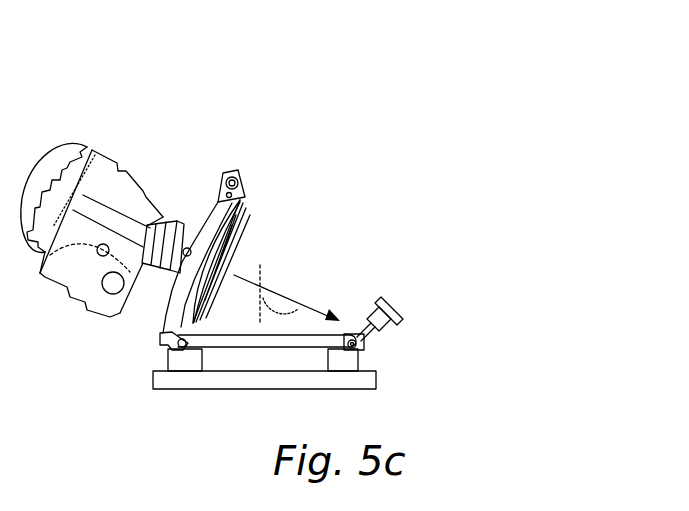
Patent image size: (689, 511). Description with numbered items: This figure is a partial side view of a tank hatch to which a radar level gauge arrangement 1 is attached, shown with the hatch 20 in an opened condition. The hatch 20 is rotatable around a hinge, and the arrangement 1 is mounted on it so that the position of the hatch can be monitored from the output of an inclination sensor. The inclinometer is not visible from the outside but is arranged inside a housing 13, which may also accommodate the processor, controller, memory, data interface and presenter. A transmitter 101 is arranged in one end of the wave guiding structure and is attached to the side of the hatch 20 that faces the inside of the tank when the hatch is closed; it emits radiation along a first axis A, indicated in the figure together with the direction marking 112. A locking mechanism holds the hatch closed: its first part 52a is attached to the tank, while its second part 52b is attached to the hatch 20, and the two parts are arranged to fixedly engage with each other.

The radar level gauge arrangement 1 is at (298, 79).
The housing 13 is at (71, 119).
The hatch 20 is at (194, 182).
The first part of the locking mechanism 52a is at (360, 346).
The second part of the locking mechanism 52b is at (240, 181).
The transmitter 101 is at (243, 257).
The tilt direction arrow 112 is at (297, 308).
The first axis A is at (353, 292).